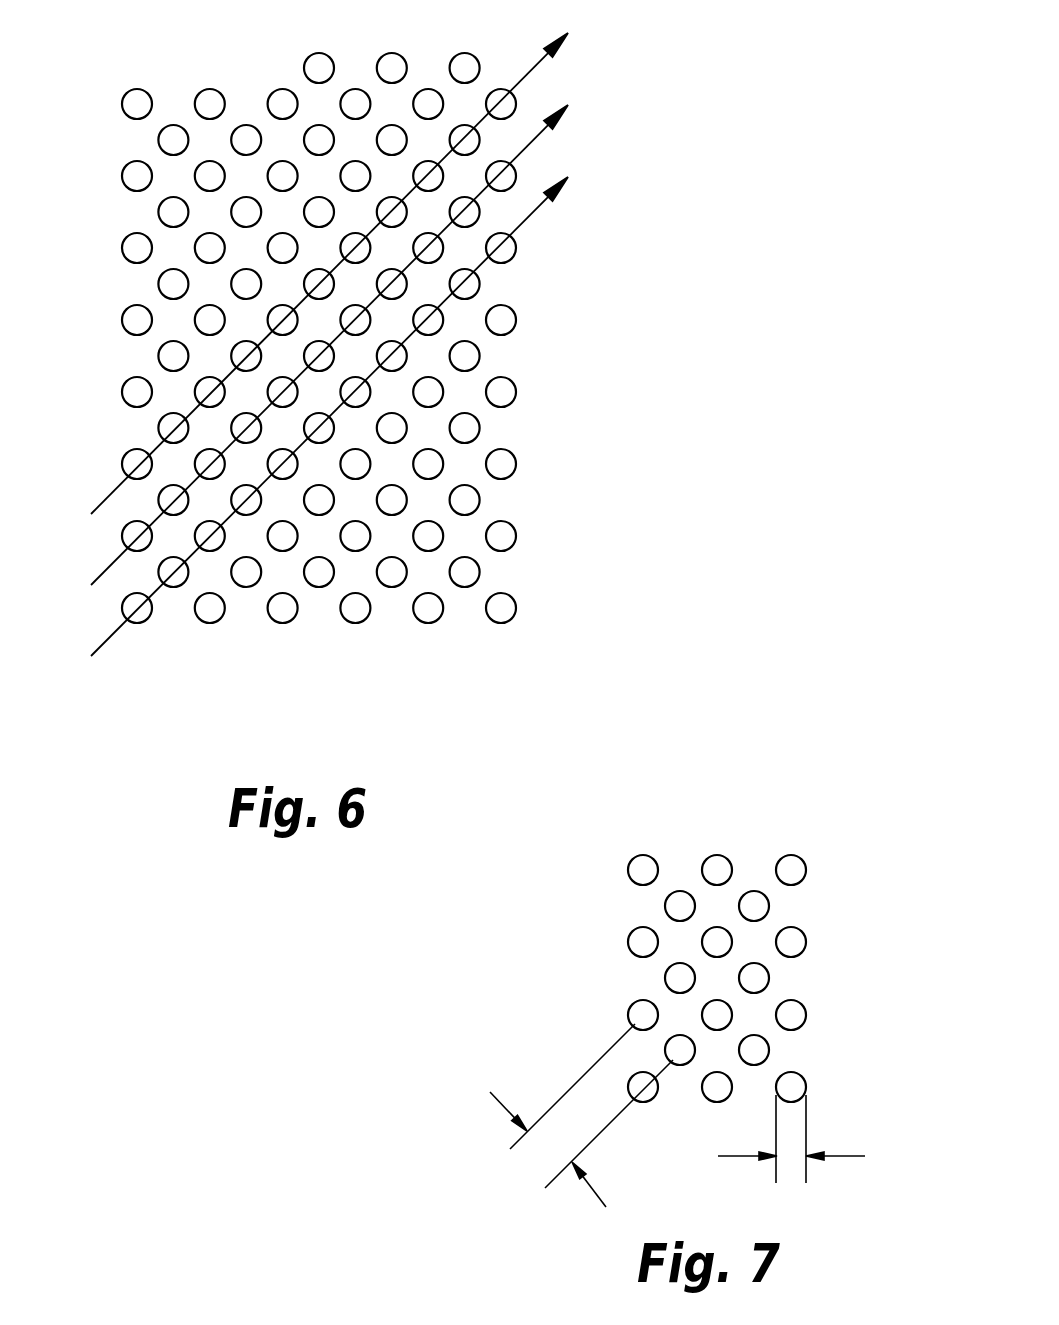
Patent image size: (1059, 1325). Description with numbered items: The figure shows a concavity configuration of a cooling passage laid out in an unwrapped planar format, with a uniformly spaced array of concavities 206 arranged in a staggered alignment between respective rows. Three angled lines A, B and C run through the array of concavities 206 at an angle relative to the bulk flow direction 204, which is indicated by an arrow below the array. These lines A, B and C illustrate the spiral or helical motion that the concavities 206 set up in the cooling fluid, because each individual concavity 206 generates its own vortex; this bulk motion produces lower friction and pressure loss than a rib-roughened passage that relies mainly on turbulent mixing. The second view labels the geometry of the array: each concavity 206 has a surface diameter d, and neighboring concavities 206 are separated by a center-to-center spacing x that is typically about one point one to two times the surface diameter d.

In FIG. 6, the bulk flow direction 204 is at (301, 658).
In FIG. 6, the concavity 206 is at (211, 90).
In FIG. 7, the concavity 206 is at (717, 856).
In FIG. 6, the angled line A is at (311, 289).
In FIG. 6, the angled line B is at (311, 360).
In FIG. 6, the angled line C is at (311, 431).
In FIG. 7, the center-to-center spacing x is at (581, 1115).
In FIG. 7, the surface diameter d is at (791, 1139).